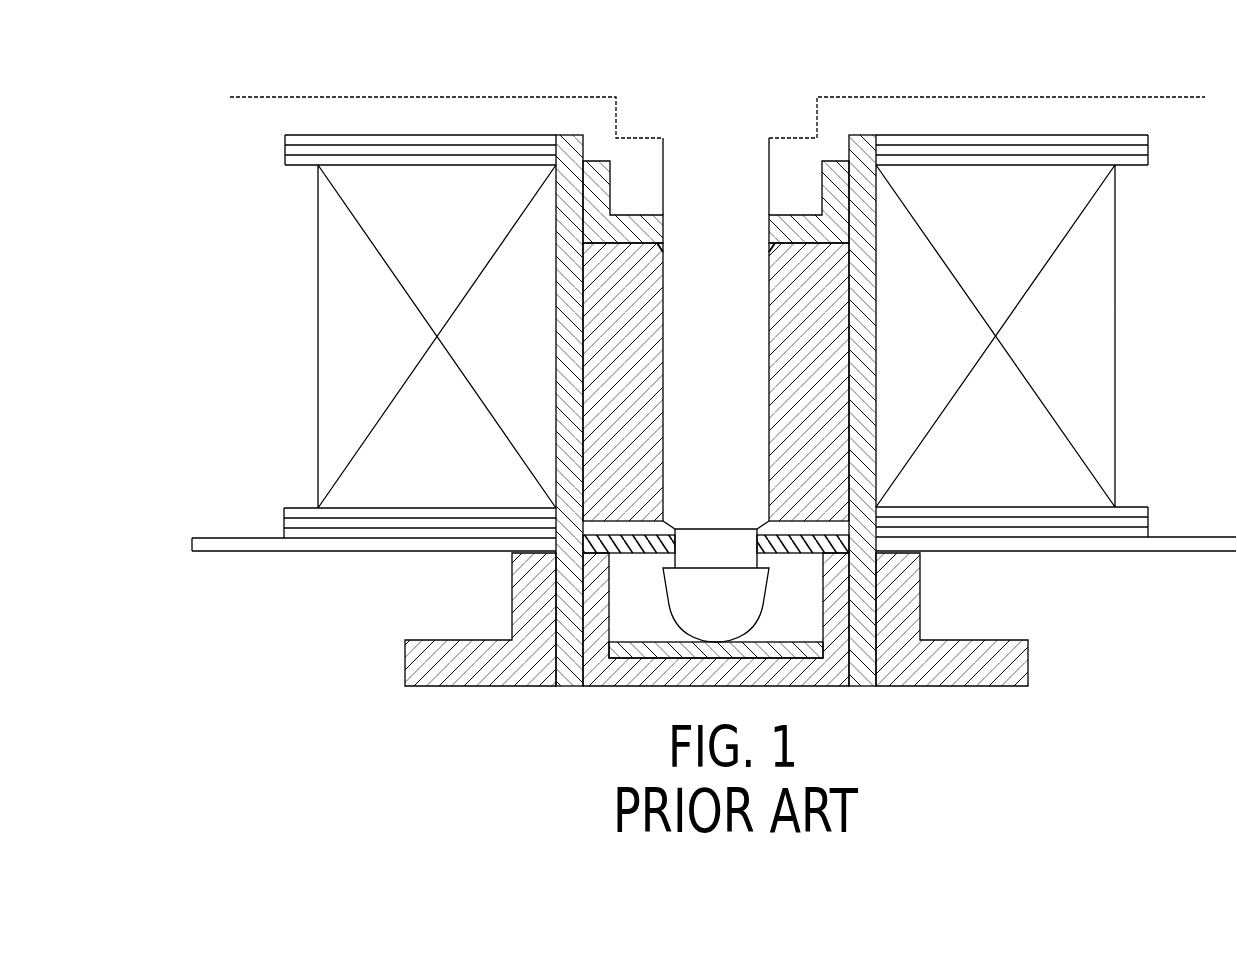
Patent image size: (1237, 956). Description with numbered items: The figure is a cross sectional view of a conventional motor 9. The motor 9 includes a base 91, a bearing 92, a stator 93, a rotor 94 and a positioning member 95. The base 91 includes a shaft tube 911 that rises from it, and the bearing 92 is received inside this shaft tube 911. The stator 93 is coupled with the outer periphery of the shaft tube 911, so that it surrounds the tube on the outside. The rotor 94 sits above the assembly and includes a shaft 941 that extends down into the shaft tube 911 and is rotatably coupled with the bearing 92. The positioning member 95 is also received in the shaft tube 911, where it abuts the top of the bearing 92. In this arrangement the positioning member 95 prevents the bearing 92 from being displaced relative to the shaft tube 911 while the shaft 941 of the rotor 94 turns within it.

The motor 9 is at (280, 628).
The base 91 is at (438, 672).
The shaft tube 911 is at (568, 140).
The bearing 92 is at (810, 280).
The stator 93 is at (1075, 378).
The rotor 94 is at (352, 97).
The shaft 941 is at (712, 162).
The positioning member 95 is at (598, 182).